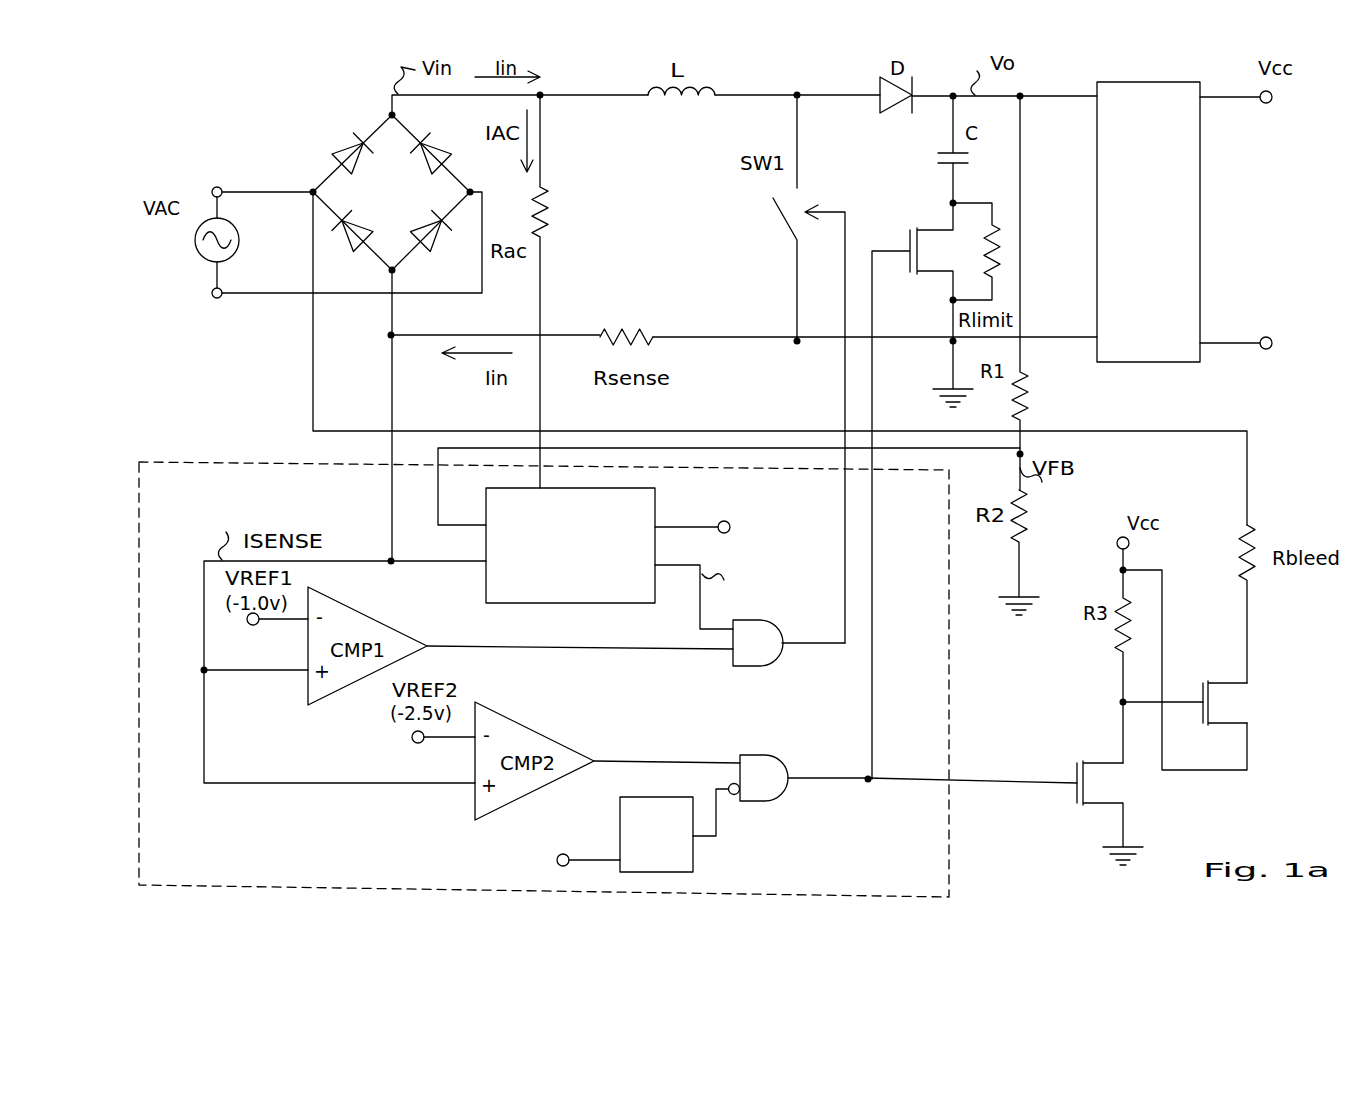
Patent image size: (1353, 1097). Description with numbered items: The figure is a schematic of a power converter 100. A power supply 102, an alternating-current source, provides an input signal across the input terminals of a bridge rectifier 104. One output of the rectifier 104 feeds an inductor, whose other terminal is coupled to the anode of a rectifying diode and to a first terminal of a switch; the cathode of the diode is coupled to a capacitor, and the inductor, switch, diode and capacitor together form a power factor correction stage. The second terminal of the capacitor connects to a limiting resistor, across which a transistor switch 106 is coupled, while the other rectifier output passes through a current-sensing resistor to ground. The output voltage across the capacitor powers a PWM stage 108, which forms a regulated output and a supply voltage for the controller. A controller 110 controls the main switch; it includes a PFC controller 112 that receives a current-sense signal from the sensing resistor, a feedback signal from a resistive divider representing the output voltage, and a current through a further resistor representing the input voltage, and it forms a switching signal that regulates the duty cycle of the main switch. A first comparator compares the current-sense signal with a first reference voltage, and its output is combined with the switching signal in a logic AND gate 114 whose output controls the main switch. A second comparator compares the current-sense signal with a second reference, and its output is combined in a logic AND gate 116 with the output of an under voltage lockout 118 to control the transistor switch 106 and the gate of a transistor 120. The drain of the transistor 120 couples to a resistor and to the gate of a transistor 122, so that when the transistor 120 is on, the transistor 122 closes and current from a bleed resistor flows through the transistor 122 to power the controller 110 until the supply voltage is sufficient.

The power converter 100 is at (306, 89).
The power supply 102 is at (240, 236).
The bridge rectifier 104 is at (410, 204).
The transistor switch 106 is at (914, 487).
The PWM stage 108 is at (1140, 82).
The controller 110 is at (190, 462).
The PFC controller 112 is at (640, 594).
The logic AND gate 114 is at (745, 615).
The logic AND gate 116 is at (760, 754).
The under voltage lockout 118 is at (680, 866).
The transistor 120 is at (1100, 797).
The transistor 122 is at (1247, 703).